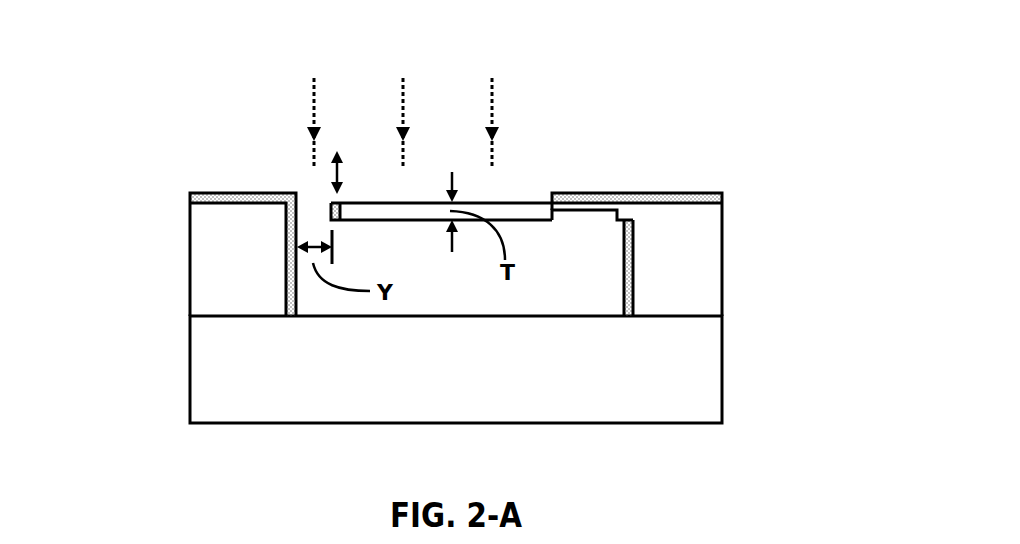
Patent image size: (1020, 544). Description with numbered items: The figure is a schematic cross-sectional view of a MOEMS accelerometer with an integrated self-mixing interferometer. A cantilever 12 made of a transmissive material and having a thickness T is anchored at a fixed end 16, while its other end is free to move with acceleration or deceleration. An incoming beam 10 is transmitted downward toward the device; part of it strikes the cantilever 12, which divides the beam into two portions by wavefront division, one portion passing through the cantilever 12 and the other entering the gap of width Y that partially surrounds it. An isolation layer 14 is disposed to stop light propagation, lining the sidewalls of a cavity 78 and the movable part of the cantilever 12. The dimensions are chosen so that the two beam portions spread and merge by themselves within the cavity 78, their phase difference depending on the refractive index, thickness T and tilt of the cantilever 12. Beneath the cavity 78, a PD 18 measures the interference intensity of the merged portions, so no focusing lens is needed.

The incoming beam 10 is at (305, 106).
The cantilever 12 is at (359, 212).
The isolation layer 14 is at (234, 193).
The fixed end 16 is at (703, 265).
The PD 18 is at (456, 369).
The cavity 78 is at (542, 264).